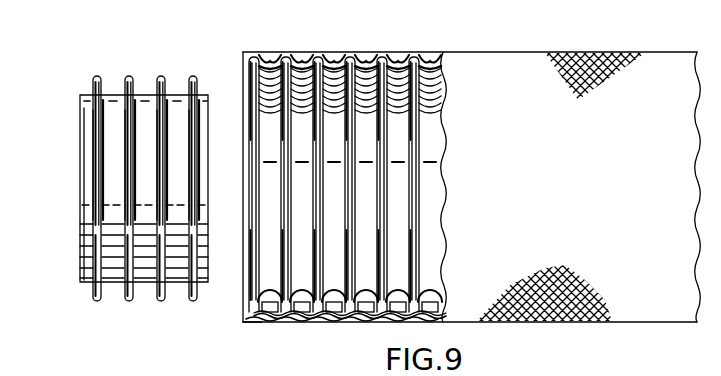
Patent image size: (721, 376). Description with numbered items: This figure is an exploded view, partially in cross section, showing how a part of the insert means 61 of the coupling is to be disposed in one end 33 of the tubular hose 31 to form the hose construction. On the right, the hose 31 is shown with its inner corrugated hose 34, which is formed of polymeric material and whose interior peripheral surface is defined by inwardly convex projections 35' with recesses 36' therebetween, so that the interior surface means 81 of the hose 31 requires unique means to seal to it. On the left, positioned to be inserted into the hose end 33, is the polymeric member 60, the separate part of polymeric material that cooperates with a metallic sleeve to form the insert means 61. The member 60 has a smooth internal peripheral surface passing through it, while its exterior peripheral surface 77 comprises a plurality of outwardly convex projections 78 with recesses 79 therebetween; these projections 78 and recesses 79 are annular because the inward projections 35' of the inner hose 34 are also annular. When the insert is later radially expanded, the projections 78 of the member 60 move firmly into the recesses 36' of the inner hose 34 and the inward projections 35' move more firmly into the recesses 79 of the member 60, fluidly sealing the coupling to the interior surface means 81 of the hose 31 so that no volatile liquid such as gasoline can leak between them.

The tubular hose 31 is at (535, 63).
The end of the hose 33 is at (338, 184).
The inner corrugated hose 34 is at (440, 128).
The inwardly convex projections 35' is at (368, 287).
The recesses 36' is at (372, 262).
The polymeric member 60 is at (122, 161).
The insert means 61 is at (83, 247).
The exterior peripheral surface 77 is at (111, 91).
The outwardly convex projections 78 is at (128, 78).
The recesses 79 is at (176, 84).
The interior surface means of the hose 81 is at (272, 345).